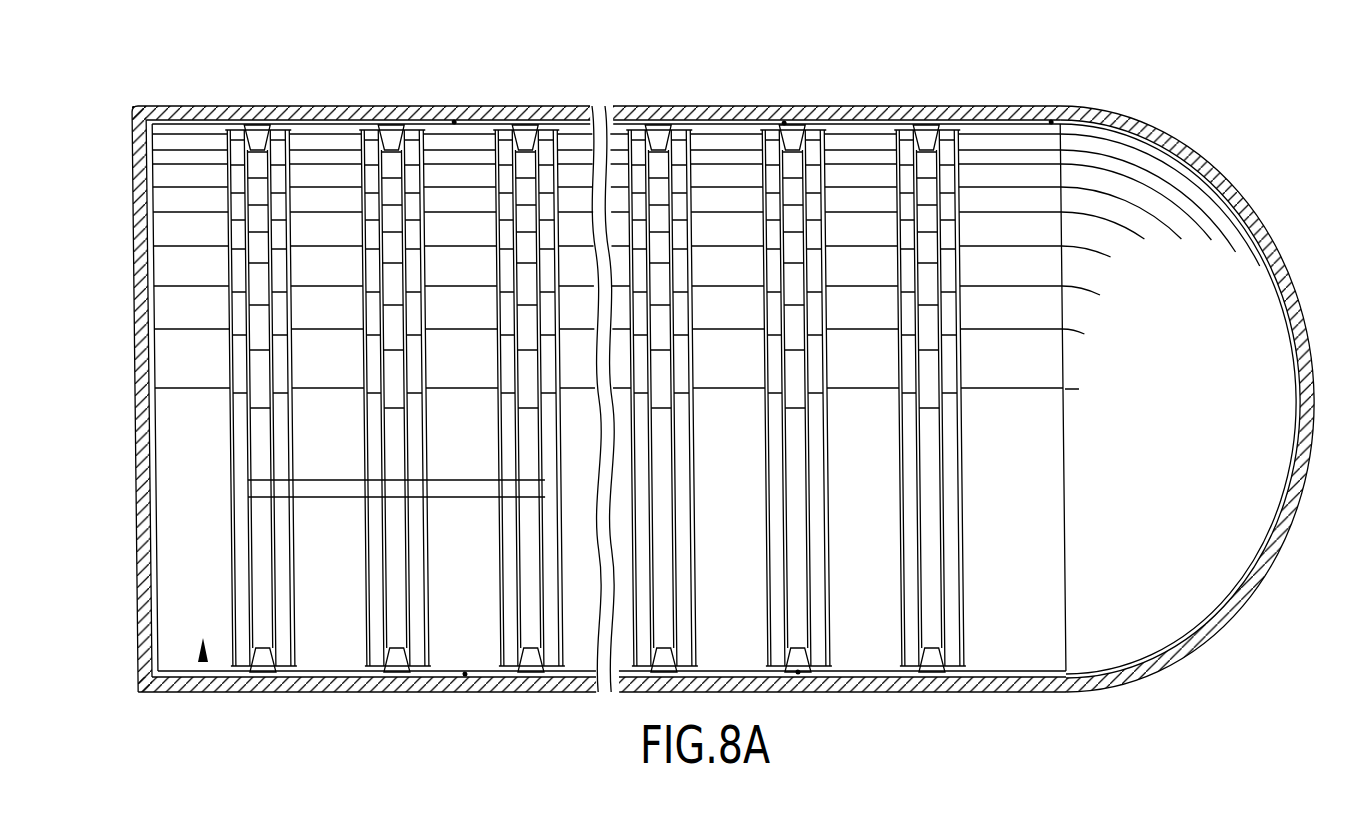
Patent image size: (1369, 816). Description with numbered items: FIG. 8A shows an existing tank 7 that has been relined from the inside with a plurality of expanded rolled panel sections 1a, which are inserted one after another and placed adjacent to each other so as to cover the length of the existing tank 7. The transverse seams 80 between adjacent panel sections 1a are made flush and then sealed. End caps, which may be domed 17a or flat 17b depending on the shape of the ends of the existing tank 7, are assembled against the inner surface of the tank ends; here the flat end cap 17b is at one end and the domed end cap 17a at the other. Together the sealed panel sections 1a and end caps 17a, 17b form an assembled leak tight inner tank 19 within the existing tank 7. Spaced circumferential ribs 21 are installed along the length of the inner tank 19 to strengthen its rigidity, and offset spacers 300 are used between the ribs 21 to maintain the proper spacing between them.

The existing tank 7 is at (135, 107).
The rolled panel section 1a is at (1051, 100).
The transverse seam 80 is at (455, 122).
The circumferential rib 21 is at (556, 124).
The domed end cap 17a is at (1270, 282).
The flat end cap 17b is at (147, 288).
The offset spacer 300 is at (326, 487).
The inner tank 19 is at (203, 660).